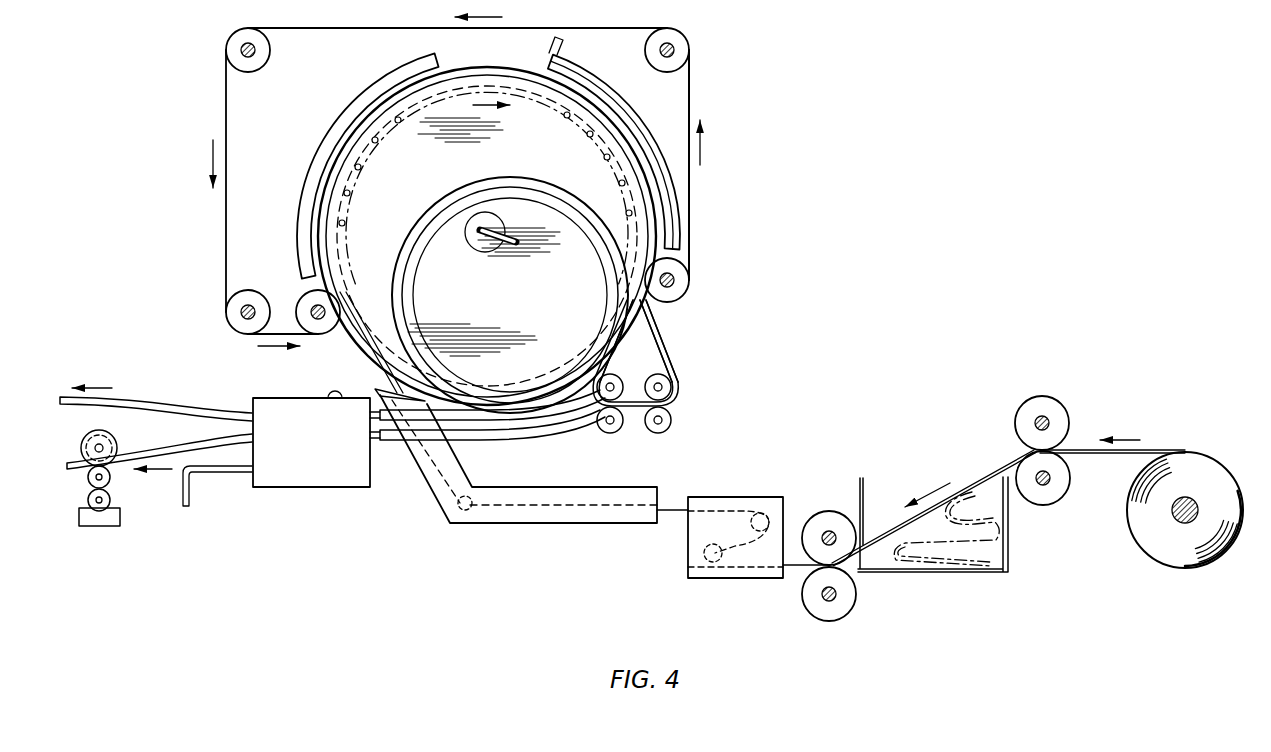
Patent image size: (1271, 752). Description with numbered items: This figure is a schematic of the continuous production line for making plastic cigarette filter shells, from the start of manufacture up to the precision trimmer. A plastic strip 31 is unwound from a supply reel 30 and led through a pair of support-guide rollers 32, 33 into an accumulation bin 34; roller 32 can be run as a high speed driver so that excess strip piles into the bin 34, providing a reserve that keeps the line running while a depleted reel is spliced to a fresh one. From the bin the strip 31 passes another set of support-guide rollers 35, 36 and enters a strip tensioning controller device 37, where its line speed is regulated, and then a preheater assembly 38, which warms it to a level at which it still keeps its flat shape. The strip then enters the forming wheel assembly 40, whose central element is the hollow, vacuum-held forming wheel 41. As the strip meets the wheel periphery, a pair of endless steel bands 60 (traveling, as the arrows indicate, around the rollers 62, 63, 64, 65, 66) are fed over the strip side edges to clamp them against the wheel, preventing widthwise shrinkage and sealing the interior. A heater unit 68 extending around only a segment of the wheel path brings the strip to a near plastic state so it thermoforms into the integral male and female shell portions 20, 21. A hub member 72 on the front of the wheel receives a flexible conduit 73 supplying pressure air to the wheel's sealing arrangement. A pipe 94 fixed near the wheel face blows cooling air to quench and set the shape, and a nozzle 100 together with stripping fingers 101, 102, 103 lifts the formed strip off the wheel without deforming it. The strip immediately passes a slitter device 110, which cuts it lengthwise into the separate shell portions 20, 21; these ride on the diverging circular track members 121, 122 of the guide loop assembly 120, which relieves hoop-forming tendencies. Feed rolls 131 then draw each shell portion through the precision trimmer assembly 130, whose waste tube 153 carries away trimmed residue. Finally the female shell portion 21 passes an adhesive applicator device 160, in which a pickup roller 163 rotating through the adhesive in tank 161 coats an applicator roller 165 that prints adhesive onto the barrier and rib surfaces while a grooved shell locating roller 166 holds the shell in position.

The male shell portion 20 is at (185, 410).
The female shell portion 21 is at (186, 451).
The supply reel 30 is at (1152, 561).
The plastic strip 31 is at (485, 70).
The support-guide roller 32 is at (1065, 412).
The support-guide roller 33 is at (1064, 498).
The accumulation bin 34 is at (1009, 563).
The support-guide roller 35 is at (826, 510).
The support-guide roller 36 is at (826, 621).
The strip tensioning controller device 37 is at (758, 496).
The preheater assembly 38 is at (532, 525).
The forming wheel assembly 40 is at (694, 177).
The forming wheel 41 is at (546, 150).
The endless steel band 60 is at (690, 72).
The roller 62 is at (684, 292).
The roller 63 is at (645, 48).
The roller 64 is at (255, 72).
The roller 65 is at (249, 297).
The roller 66 is at (306, 299).
The heater unit 68 is at (357, 97).
The hub member 72 is at (469, 244).
The flexible conduit 73 is at (510, 243).
The pipe 94 is at (660, 108).
The nozzle 100 is at (634, 386).
The stripping finger 101 is at (644, 320).
The stripping finger 102 is at (662, 341).
The stripping finger 103 is at (616, 341).
The slitter device 110 is at (590, 421).
The guide loop assembly 120 is at (430, 191).
The track member 121 is at (562, 193).
The track member 122 is at (584, 240).
The precision trimmer assembly 130 is at (303, 393).
The feed rolls 131 is at (333, 401).
The waste tube 153 is at (240, 473).
The adhesive applicator device 160 is at (126, 509).
The tank 161 is at (101, 527).
The pickup roller 163 is at (111, 497).
The applicator roller 165 is at (88, 480).
The shell locating roller 166 is at (87, 439).